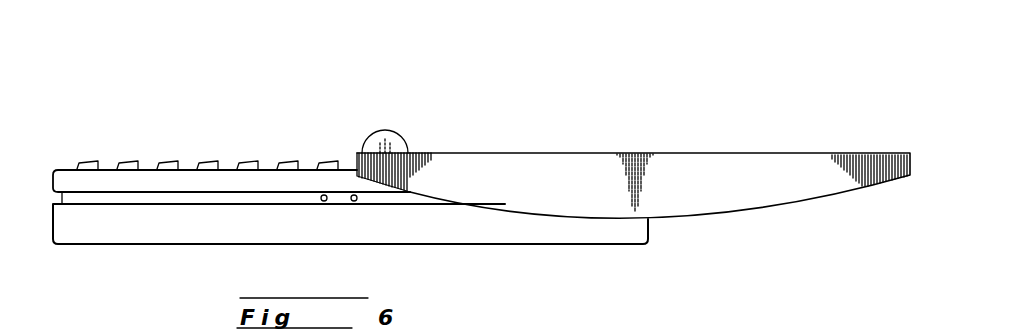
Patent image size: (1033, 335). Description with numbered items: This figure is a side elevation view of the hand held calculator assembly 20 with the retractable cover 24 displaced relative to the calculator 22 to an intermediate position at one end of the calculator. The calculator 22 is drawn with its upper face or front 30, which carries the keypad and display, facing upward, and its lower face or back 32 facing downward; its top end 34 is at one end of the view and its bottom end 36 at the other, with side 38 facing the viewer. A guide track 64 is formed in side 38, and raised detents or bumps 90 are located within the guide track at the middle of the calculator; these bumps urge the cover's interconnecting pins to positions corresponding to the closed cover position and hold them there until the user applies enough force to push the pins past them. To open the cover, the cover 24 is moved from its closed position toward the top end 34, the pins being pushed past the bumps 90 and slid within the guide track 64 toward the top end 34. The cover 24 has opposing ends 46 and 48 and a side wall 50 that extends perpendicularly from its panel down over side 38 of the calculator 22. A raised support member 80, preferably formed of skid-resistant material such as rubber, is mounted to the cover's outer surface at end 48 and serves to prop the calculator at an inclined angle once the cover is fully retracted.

The calculator assembly 20 is at (610, 118).
The calculator 22 is at (463, 249).
The retractable cover 24 is at (737, 140).
The upper face or front 30 is at (185, 158).
The lower face or back 32 is at (508, 245).
The top end 34 is at (652, 233).
The bottom end 36 is at (53, 178).
The side 38 is at (125, 232).
The end 46 is at (880, 160).
The end 48 is at (357, 165).
The side wall 50 is at (512, 167).
The guide track 64 is at (103, 198).
The raised support member 80 is at (400, 131).
The raised detents or bumps 90 is at (324, 201).